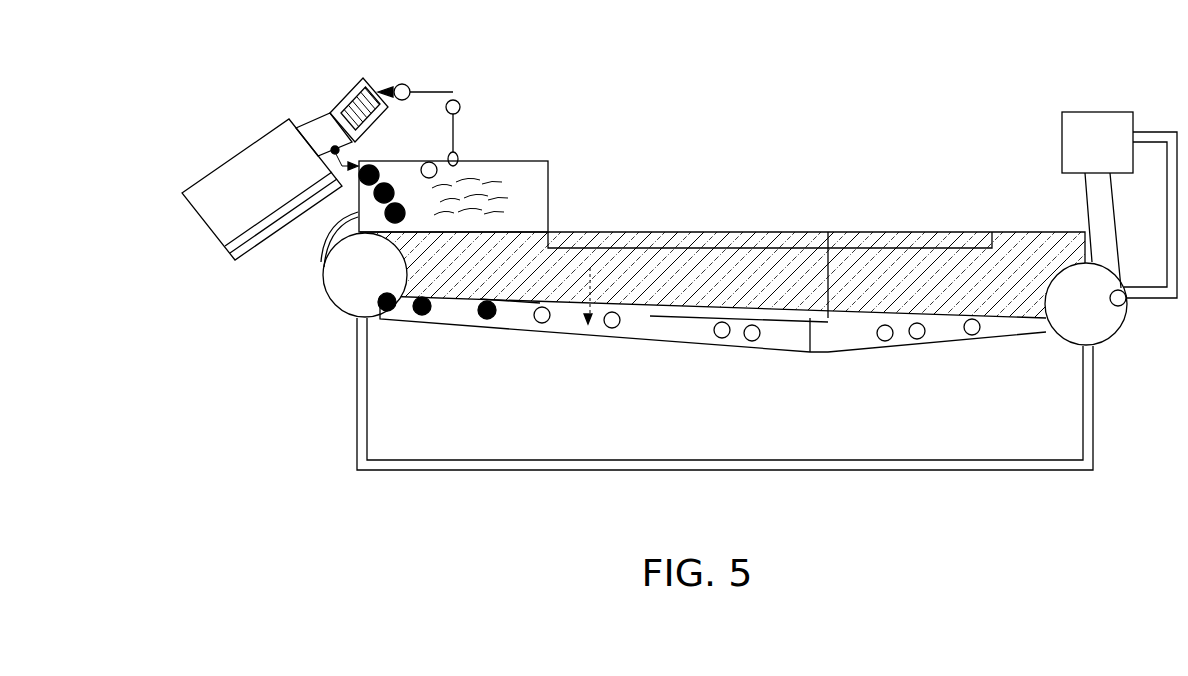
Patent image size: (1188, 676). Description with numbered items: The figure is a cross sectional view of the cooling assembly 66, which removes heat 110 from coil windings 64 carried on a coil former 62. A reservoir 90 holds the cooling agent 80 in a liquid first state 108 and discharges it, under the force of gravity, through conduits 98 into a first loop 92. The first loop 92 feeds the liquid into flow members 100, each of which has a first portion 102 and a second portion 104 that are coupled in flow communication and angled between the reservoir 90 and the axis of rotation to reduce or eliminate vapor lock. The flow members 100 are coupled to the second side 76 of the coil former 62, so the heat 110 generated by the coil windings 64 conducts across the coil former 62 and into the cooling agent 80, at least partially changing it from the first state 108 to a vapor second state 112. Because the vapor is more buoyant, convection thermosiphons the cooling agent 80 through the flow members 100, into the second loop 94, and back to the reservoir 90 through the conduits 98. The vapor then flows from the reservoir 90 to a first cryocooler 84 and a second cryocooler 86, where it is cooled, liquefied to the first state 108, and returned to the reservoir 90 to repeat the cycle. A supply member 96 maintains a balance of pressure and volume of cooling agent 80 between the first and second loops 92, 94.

The cooling assembly 66 is at (202, 85).
The first cryocooler 84 is at (232, 162).
The conduits 98 is at (337, 133).
The second state 112 is at (404, 84).
The cooling agent 80 is at (483, 172).
The reservoir 90 is at (537, 160).
The second cryocooler 86 is at (1088, 122).
The heat 110 is at (590, 268).
The coil former 62 is at (417, 265).
The coil windings 64 is at (790, 240).
The first state 108 is at (357, 175).
The first loop 92 is at (333, 302).
The second loop 94 is at (1130, 335).
The flow member 100 is at (437, 325).
The first portion 102 is at (670, 335).
The second side 76 is at (516, 298).
The second portion 104 is at (913, 345).
The supply member 96 is at (916, 470).